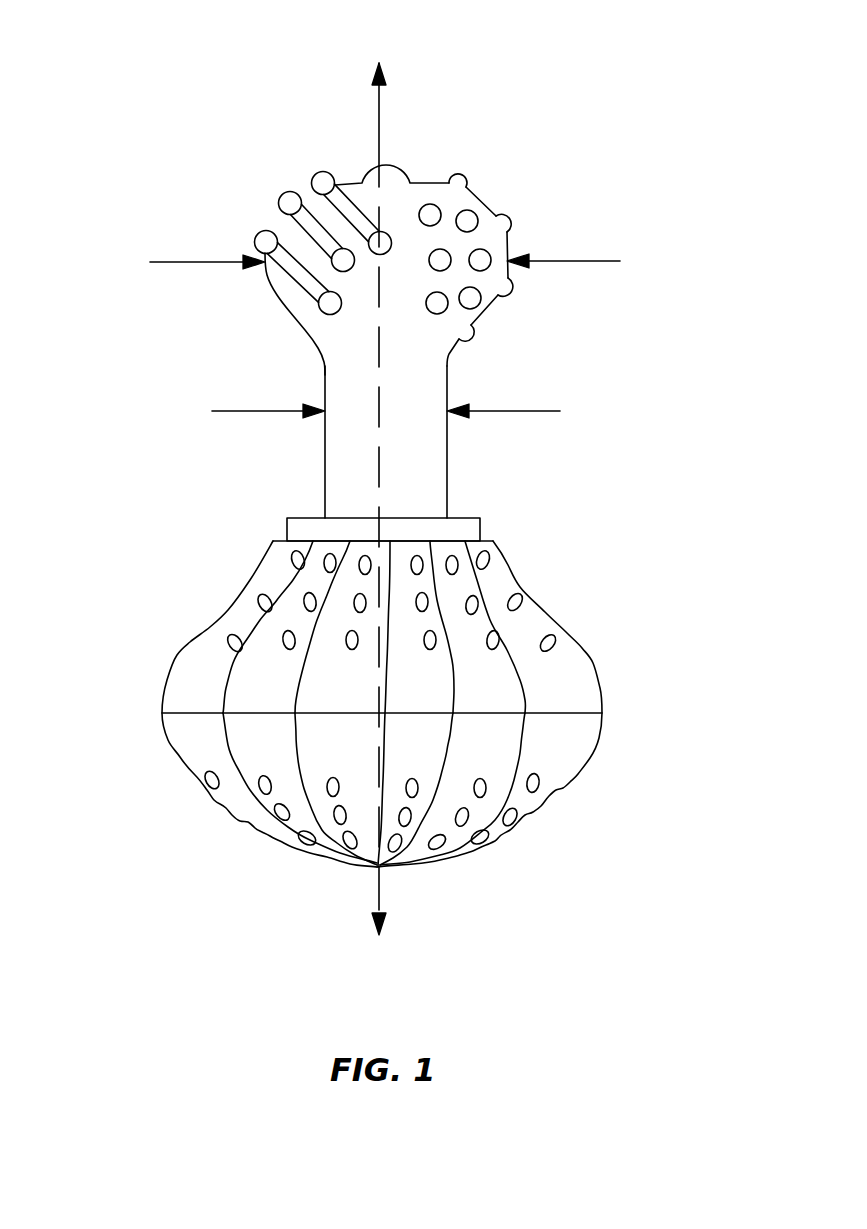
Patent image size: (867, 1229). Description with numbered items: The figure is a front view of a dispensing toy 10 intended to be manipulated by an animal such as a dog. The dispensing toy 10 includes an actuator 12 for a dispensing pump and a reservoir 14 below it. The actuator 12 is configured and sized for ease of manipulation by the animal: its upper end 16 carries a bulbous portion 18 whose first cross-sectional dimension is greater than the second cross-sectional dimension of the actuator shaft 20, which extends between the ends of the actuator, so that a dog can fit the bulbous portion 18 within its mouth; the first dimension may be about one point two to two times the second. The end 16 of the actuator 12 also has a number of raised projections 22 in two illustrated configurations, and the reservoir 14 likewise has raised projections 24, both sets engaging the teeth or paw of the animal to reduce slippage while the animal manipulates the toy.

The dispensing toy 10 is at (216, 51).
The actuator 12 is at (480, 200).
The reservoir 14 is at (598, 677).
The second end of the actuator 16 is at (580, 193).
The bulbous portion 18 is at (530, 335).
The actuator shaft 20 is at (447, 455).
The raised projections 22 is at (280, 197).
The raised projections 24 is at (210, 782).